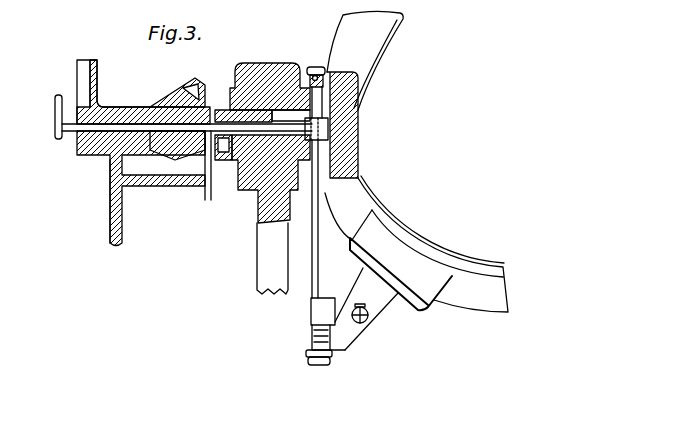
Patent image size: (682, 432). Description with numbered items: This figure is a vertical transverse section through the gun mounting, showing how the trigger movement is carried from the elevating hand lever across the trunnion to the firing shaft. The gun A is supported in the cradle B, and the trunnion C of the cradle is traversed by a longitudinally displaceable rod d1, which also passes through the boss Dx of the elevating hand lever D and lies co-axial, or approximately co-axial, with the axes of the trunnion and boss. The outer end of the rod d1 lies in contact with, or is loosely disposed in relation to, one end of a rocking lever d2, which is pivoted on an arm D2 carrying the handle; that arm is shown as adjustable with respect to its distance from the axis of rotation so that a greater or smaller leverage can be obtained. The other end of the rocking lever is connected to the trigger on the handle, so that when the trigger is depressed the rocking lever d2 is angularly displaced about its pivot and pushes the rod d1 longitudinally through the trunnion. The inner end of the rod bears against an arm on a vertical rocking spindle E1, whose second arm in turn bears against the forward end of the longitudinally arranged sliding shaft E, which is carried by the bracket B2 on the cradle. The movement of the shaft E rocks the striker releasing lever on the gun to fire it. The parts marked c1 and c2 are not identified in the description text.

The gun A is at (416, 232).
The cradle B is at (365, 59).
The bracket B2 is at (347, 339).
The trunnion C is at (246, 94).
The clamp block c1 is at (350, 310).
The collar c2 is at (222, 186).
The elevating hand lever D is at (82, 92).
The arm D2 is at (86, 86).
The boss Dx is at (152, 107).
The longitudinally displaceable rod d1 is at (97, 153).
The rocking lever d2 is at (55, 116).
The longitudinally arranged shaft E is at (368, 318).
The vertical rocking spindle E1 is at (317, 210).